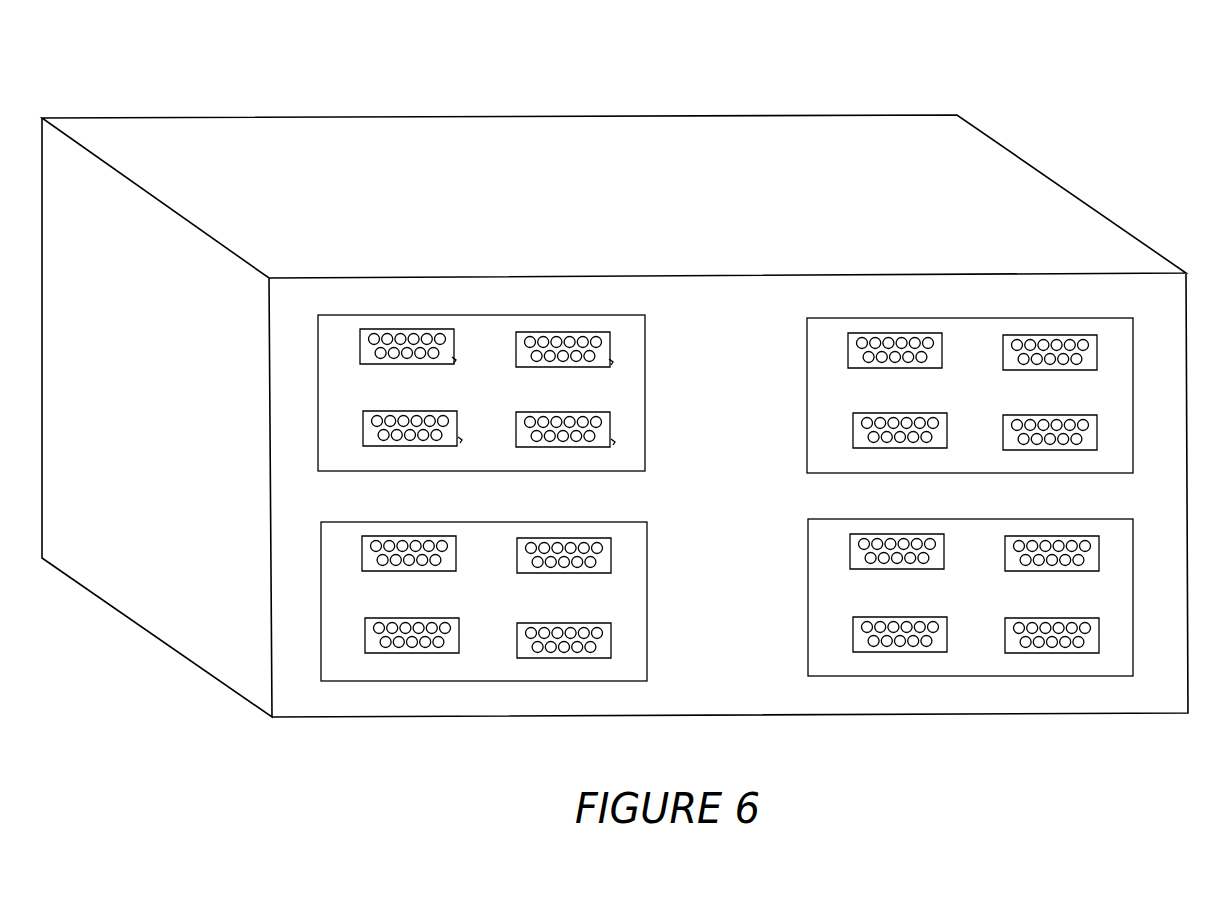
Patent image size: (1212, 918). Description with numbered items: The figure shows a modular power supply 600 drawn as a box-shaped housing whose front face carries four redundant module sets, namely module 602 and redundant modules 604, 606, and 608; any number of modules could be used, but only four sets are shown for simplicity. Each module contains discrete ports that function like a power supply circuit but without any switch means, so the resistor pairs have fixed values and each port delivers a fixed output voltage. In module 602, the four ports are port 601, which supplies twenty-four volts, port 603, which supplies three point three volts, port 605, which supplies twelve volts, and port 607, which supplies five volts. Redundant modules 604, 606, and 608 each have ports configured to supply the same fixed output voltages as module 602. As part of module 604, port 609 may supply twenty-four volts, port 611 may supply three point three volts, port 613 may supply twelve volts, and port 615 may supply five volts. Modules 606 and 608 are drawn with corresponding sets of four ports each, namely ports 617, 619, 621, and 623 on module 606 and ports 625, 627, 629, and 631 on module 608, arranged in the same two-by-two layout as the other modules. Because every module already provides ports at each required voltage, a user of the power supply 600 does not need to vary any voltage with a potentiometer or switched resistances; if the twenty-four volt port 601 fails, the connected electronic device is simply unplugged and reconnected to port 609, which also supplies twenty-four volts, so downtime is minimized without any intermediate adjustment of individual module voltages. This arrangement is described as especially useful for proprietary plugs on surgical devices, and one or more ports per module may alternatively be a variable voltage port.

The modular power supply 600 is at (556, 146).
The port 601 is at (404, 329).
The module 602 is at (646, 328).
The port 603 is at (572, 332).
The redundant module 604 is at (1133, 324).
The port 605 is at (410, 411).
The redundant module 606 is at (648, 550).
The port 607 is at (560, 412).
The redundant module 608 is at (1133, 537).
The port 609 is at (892, 333).
The port 611 is at (1048, 335).
The port 613 is at (897, 413).
The port 615 is at (1052, 415).
The power output connector 617 is at (415, 536).
The power output connector 619 is at (563, 538).
The power output connector 621 is at (412, 618).
The power output connector 623 is at (560, 623).
The power output connector 625 is at (895, 534).
The power output connector 627 is at (1054, 536).
The power output connector 629 is at (898, 617).
The power output connector 631 is at (1056, 618).